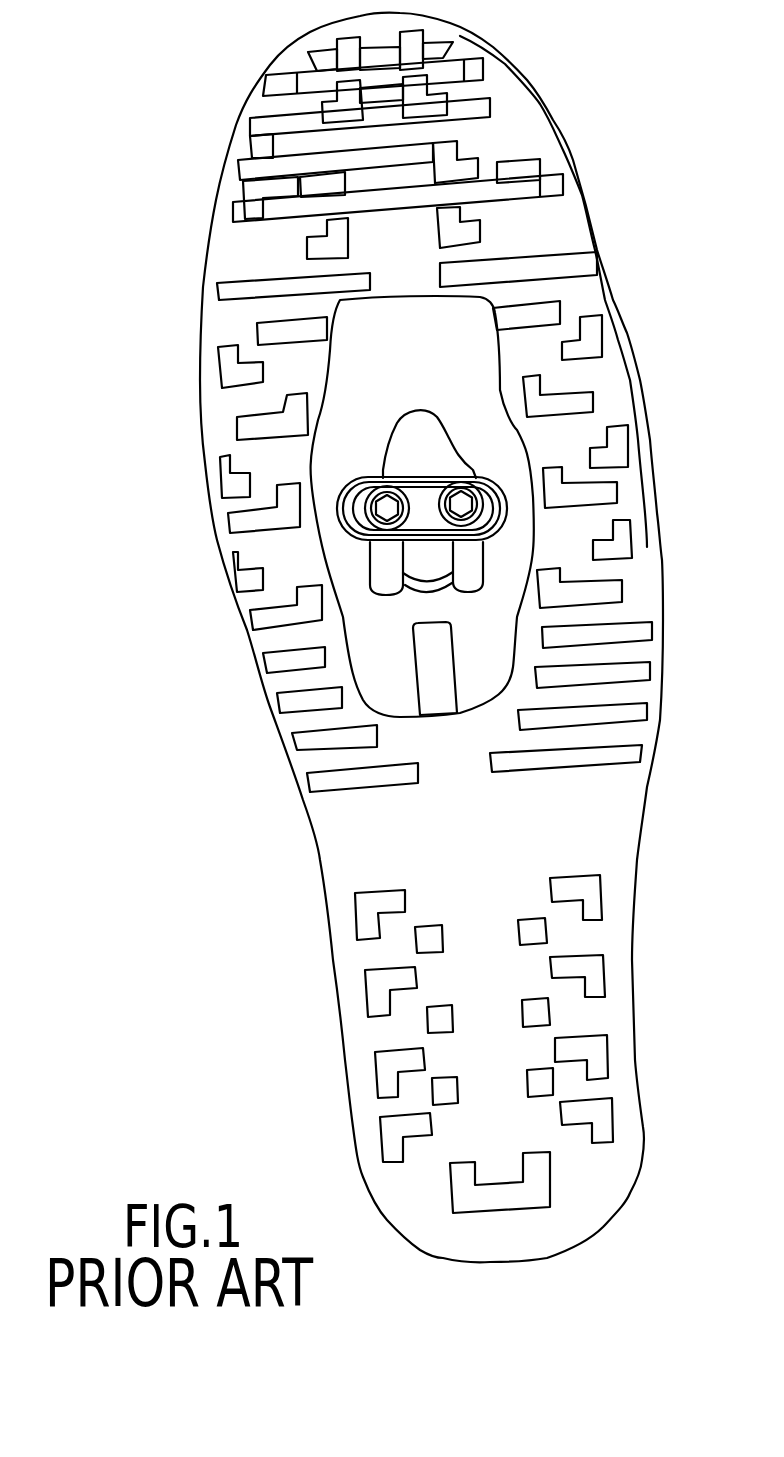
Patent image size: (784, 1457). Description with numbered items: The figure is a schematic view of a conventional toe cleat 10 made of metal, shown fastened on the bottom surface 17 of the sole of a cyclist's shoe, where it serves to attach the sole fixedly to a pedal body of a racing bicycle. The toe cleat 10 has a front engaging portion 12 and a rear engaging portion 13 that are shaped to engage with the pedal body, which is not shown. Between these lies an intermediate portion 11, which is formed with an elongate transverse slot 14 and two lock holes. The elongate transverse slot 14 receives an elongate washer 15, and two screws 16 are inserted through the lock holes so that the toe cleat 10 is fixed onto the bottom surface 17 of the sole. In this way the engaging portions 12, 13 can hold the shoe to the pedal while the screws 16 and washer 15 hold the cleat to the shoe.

The toe cleat 10 is at (437, 413).
The intermediate portion 11 is at (352, 493).
The front engaging portion 12 is at (400, 403).
The rear engaging portion 13 is at (415, 585).
The elongate transverse slot 14 is at (345, 518).
The elongate washer 15 is at (427, 487).
The screws 16 is at (463, 503).
The bottom surface 17 is at (617, 613).